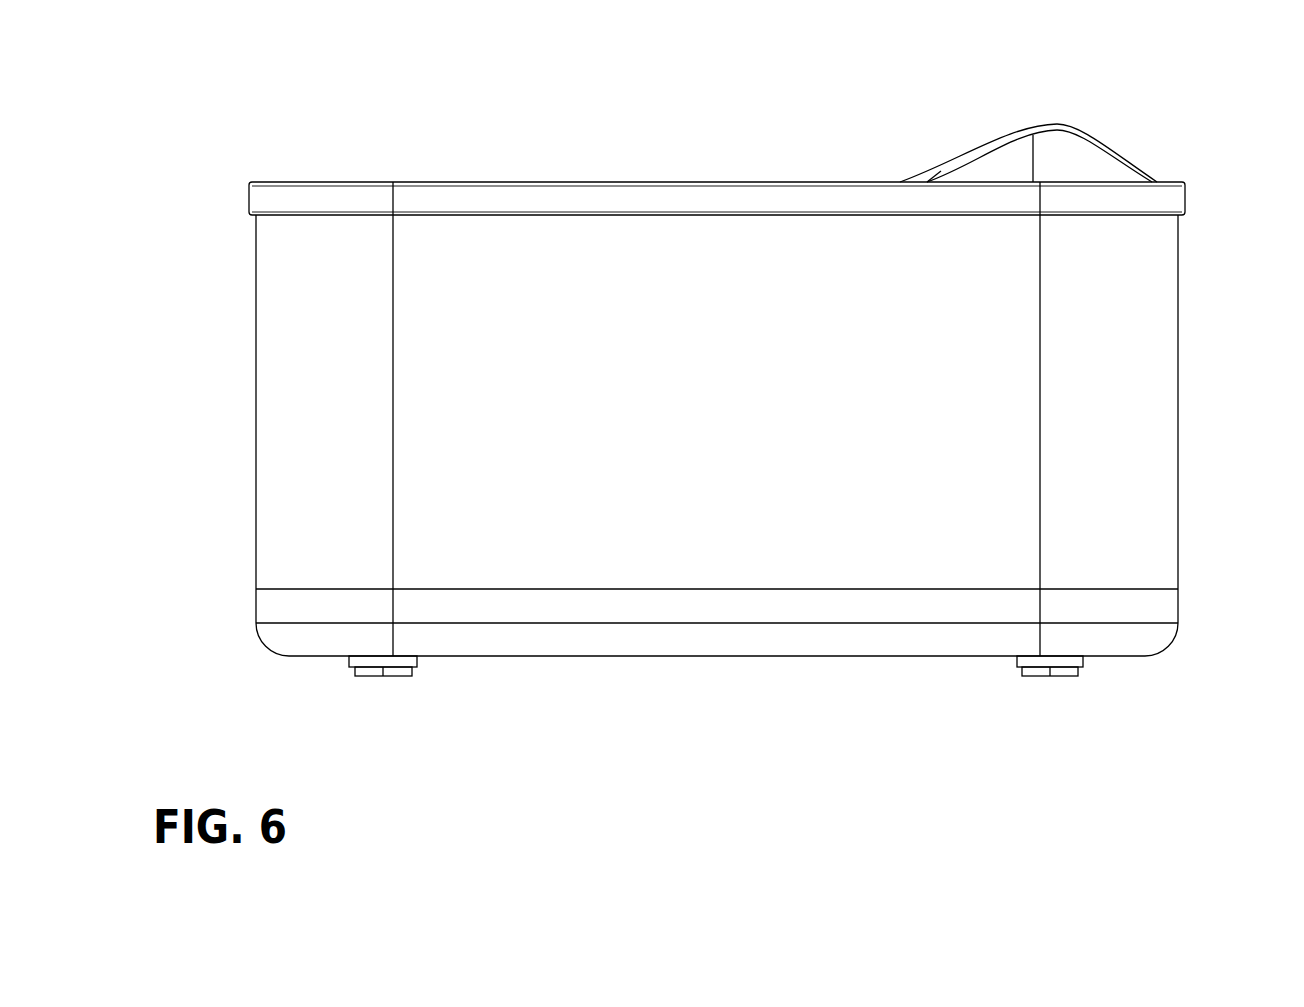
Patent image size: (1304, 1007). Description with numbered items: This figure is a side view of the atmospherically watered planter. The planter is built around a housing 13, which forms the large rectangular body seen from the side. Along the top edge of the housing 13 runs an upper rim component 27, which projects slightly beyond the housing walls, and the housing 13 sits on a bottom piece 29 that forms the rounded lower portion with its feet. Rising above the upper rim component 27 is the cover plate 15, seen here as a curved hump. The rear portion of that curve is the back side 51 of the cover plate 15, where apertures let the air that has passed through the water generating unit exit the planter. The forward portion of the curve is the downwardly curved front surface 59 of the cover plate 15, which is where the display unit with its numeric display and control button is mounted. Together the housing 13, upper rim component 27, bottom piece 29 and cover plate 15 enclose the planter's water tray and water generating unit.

The housing 13 is at (1180, 392).
The cover plate 15 is at (1058, 115).
The upper rim component 27 is at (1188, 200).
The bottom piece 29 is at (1182, 603).
The back side 51 is at (968, 155).
The downwardly curved front surface 59 is at (1127, 157).